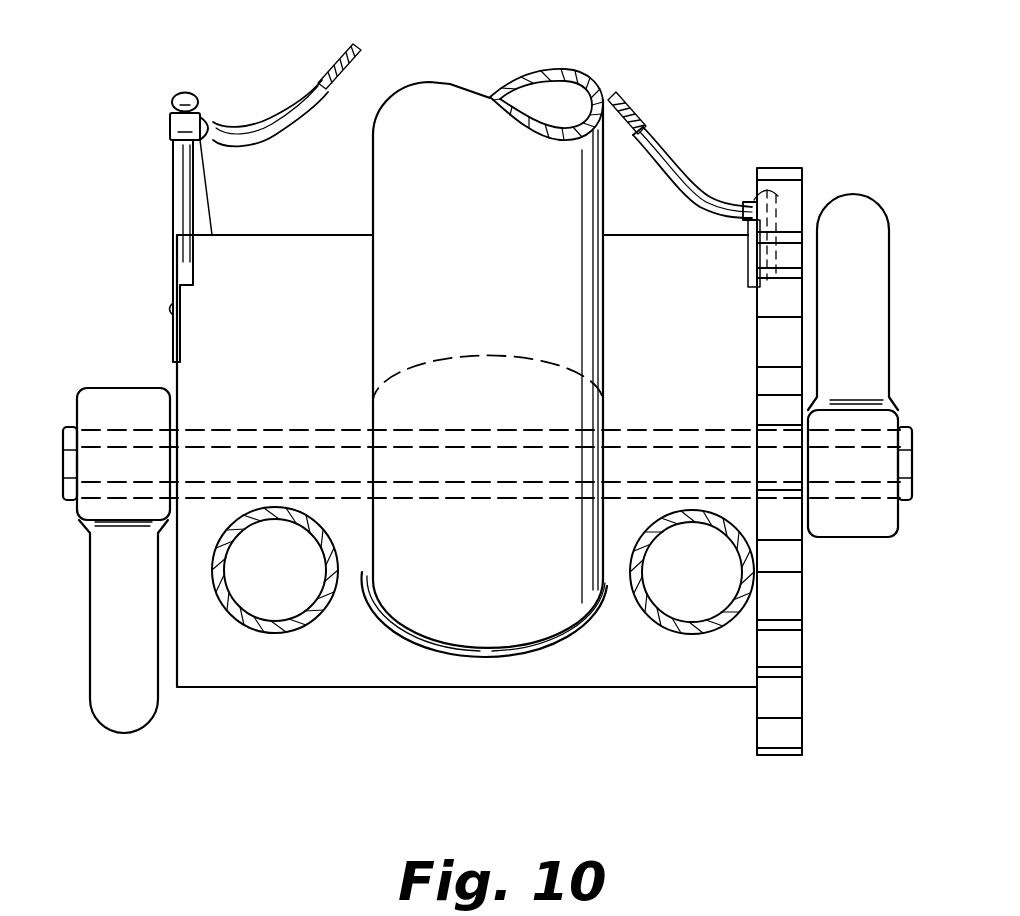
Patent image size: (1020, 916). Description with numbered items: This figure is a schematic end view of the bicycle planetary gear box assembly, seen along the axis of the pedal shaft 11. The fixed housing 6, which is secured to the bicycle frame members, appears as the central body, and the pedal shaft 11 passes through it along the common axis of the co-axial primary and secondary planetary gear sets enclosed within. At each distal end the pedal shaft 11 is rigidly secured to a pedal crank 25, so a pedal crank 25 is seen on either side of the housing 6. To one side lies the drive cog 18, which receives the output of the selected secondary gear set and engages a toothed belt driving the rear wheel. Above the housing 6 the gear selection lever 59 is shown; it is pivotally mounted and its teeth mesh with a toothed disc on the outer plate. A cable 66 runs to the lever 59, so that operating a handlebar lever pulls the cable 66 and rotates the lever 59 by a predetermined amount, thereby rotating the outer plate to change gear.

The housing 6 is at (397, 662).
The pedal shaft 11 is at (255, 462).
The drive cog 18 is at (775, 700).
The pedal crank 25 is at (118, 588).
The lever 59 is at (183, 157).
The cable 66 is at (333, 67).